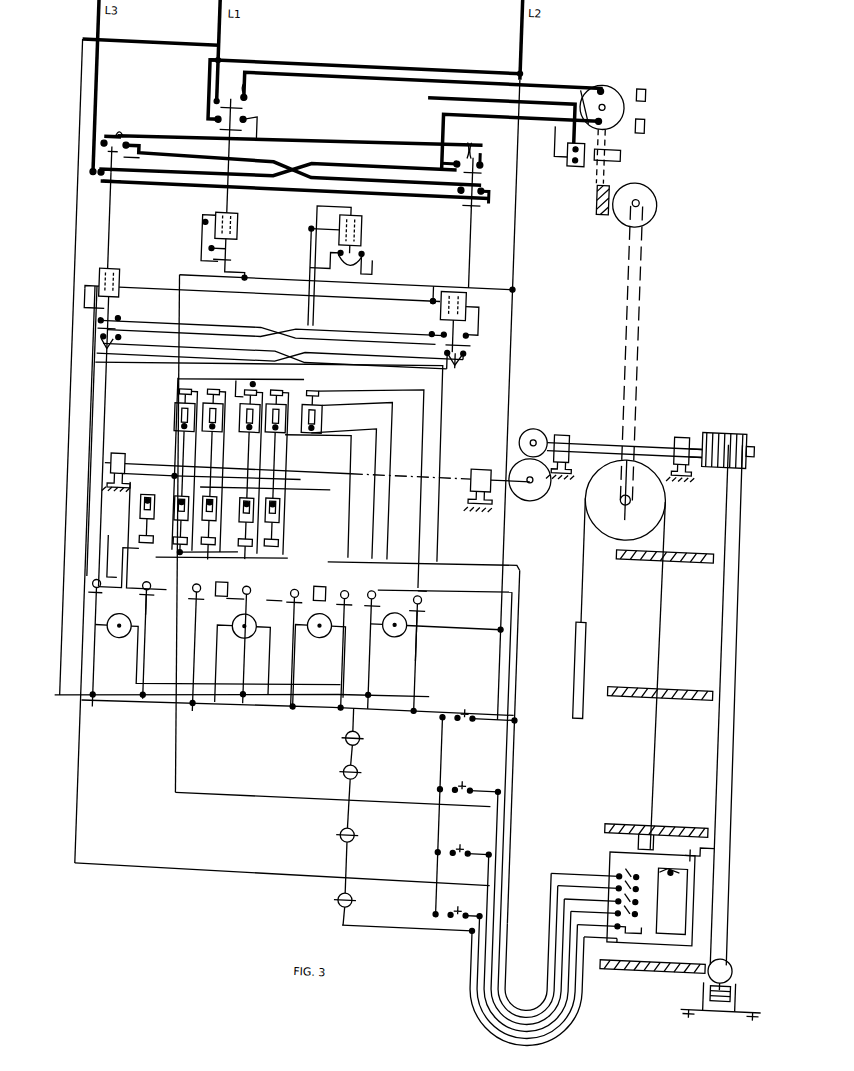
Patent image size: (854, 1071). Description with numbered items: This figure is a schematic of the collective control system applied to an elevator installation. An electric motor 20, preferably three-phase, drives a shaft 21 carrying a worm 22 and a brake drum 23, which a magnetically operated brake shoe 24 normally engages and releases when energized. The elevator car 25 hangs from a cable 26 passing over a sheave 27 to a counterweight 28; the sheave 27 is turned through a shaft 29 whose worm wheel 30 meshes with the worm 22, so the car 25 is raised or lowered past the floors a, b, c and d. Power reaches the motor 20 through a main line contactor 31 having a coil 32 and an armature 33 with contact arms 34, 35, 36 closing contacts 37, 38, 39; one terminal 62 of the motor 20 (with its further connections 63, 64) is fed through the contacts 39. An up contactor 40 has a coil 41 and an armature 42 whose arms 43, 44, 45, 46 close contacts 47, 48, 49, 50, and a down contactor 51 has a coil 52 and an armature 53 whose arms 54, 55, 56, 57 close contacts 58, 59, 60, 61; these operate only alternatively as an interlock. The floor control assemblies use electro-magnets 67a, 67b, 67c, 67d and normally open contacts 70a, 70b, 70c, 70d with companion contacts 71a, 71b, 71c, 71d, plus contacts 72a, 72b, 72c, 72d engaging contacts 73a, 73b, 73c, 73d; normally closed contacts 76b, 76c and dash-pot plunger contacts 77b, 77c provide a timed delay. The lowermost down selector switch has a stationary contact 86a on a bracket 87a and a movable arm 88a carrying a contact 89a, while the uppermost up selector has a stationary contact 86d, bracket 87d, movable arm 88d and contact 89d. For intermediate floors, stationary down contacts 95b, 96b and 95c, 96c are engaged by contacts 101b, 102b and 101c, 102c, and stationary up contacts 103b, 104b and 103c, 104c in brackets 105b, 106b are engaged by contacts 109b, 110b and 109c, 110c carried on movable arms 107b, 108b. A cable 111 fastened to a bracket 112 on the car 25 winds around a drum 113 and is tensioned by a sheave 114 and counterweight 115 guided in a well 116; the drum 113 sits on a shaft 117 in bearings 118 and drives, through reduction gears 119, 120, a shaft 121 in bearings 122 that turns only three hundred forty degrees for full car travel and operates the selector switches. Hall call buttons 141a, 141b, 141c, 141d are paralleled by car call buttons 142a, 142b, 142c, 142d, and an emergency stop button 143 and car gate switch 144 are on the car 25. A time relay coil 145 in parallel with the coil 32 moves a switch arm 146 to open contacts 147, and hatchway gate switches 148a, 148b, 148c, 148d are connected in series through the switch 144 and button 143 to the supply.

The electric motor 20 is at (612, 99).
The shaft 21 is at (610, 135).
The worm 22 is at (586, 193).
The brake drum 23 is at (608, 146).
The brake shoe 24 is at (562, 159).
The elevator car 25 is at (688, 838).
The cable 26 is at (664, 622).
The sheave 27 is at (655, 486).
The counterweight 28 is at (590, 614).
The shaft 29 is at (633, 333).
The worm wheel 30 is at (646, 195).
The main line contactor 31 is at (206, 224).
The electro-magnetic coil 32 is at (194, 232).
The armature 33 is at (200, 254).
The contact arm 34 is at (205, 270).
The contact arm 35 is at (210, 135).
The contact arm 36 is at (232, 118).
The pair of contacts 37 is at (226, 262).
The pair of contacts 38 is at (205, 126).
The pair of contacts 39 is at (224, 108).
The up contactor 40 is at (462, 300).
The electro-magnetic coil 41 is at (458, 290).
The armature 42 is at (440, 286).
The contact arm 43 is at (465, 350).
The contact arm 44 is at (462, 342).
The contact arm 45 is at (462, 203).
The contact arm 46 is at (462, 168).
The pair of contacts 47 is at (450, 366).
The pair of contacts 48 is at (452, 332).
The pair of contacts 49 is at (465, 182).
The pair of contacts 50 is at (463, 148).
The down contactor 51 is at (78, 303).
The electro-magnetic coil 52 is at (100, 282).
The armature 53 is at (112, 286).
The contact arm 54 is at (98, 350).
The contact arm 55 is at (95, 336).
The contact arm 56 is at (102, 198).
The contact arm 57 is at (130, 170).
The pair of contacts 58 is at (100, 357).
The pair of contacts 59 is at (104, 330).
The pair of contacts 60 is at (80, 180).
The pair of contacts 61 is at (108, 142).
The terminal 62 is at (586, 83).
The brush 63 is at (584, 83).
The conductor 64 is at (552, 132).
The electro-magnet 67a is at (217, 653).
The electro-magnet 67b is at (241, 659).
The electro-magnet 67c is at (319, 660).
The electro-magnet 67d is at (436, 638).
The contact 70a is at (96, 596).
The contact 70b is at (197, 601).
The contact 70c is at (298, 593).
The contact 70d is at (390, 597).
The contact 71a is at (95, 606).
The contact 71b is at (197, 612).
The contact 71c is at (305, 598).
The contact 71d is at (382, 604).
The contact 72a is at (146, 595).
The contact 72b is at (250, 593).
The contact 72c is at (375, 592).
The contact 72d is at (430, 585).
The contact 73a is at (160, 640).
The contact 73b is at (280, 610).
The contact 73c is at (380, 606).
The contact 73d is at (425, 608).
The contact 76b is at (240, 608).
The contact 76c is at (340, 598).
The plunger contact 77b is at (248, 610).
The plunger contact 77c is at (348, 592).
The stationary contact 86a is at (141, 524).
The stationary contact 86d is at (324, 422).
The bracket 87a is at (141, 514).
The bracket 87d is at (324, 434).
The movable arm 88a is at (141, 556).
The movable arm 88d is at (312, 395).
The contact 89a is at (148, 549).
The contact 89d is at (322, 402).
The stationary down contact 95b is at (180, 505).
The coil 95c is at (250, 514).
The stationary down contact 96b is at (210, 522).
The coil 96c is at (275, 514).
The contact 101b is at (180, 560).
The contact 101c is at (258, 562).
The contact 102b is at (208, 562).
The contact 102c is at (285, 545).
The stationary up contact 103b is at (172, 420).
The coil 103c is at (283, 439).
The stationary up contact 104b is at (182, 437).
The contact 104c is at (284, 414).
The bracket 105b is at (178, 430).
The bracket 106b is at (210, 440).
The movable arm 107b is at (176, 397).
The movable arm 108b is at (232, 390).
The contact 109b is at (176, 406).
The contact 109c is at (250, 393).
The contact 110b is at (208, 397).
The coil 110c is at (272, 395).
The cable 111 is at (741, 778).
The bracket 112 is at (727, 840).
The drum 113 is at (728, 420).
The sheave 114 is at (748, 956).
The counterweight 115 is at (750, 973).
The well 116 is at (754, 984).
The shaft 117 is at (600, 436).
The bearings 118 is at (560, 428).
The reduction gear 119 is at (531, 436).
The reduction gear 120 is at (530, 489).
The shaft 121 is at (456, 470).
The bearings 122 is at (124, 472).
The hall call button 141a is at (465, 908).
The hall call button 141b is at (466, 845).
The hall call button 141c is at (470, 775).
The hall call button 141d is at (474, 712).
The car call button 142a is at (650, 903).
The car call button 142b is at (650, 891).
The car call button 142c is at (650, 878).
The car call button 142d is at (640, 864).
The emergency stop button 143 is at (660, 910).
The car gate switch 144 is at (700, 865).
The time relay coil 145 is at (352, 232).
The switch arm 146 is at (356, 258).
The contacts 147 is at (352, 268).
The hatchway gate switch 148a is at (366, 902).
The hatchway gate switch 148b is at (366, 837).
The hatchway gate switch 148c is at (366, 774).
The hatchway gate switch 148d is at (368, 738).
The floor a is at (721, 954).
The floor b is at (719, 818).
The floor c is at (719, 681).
The floor d is at (715, 544).